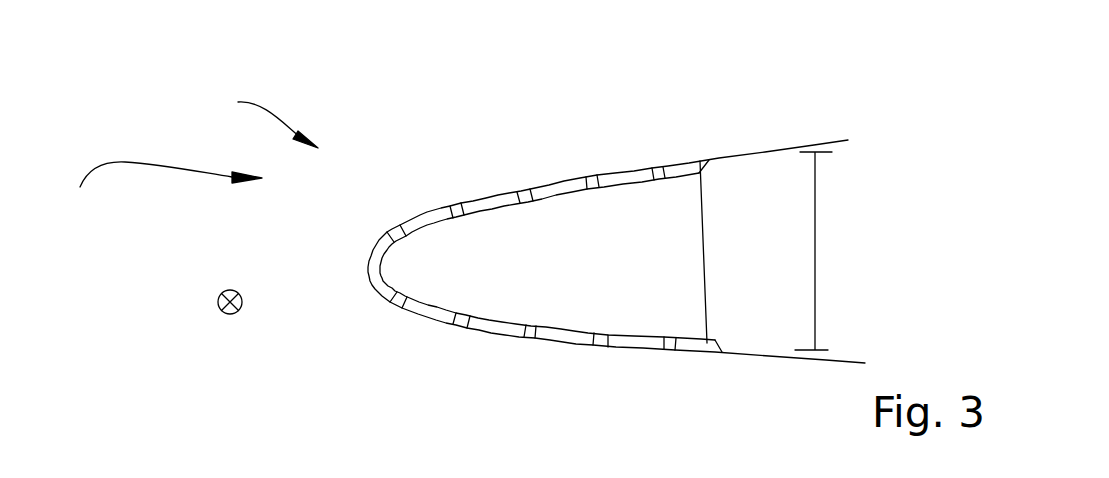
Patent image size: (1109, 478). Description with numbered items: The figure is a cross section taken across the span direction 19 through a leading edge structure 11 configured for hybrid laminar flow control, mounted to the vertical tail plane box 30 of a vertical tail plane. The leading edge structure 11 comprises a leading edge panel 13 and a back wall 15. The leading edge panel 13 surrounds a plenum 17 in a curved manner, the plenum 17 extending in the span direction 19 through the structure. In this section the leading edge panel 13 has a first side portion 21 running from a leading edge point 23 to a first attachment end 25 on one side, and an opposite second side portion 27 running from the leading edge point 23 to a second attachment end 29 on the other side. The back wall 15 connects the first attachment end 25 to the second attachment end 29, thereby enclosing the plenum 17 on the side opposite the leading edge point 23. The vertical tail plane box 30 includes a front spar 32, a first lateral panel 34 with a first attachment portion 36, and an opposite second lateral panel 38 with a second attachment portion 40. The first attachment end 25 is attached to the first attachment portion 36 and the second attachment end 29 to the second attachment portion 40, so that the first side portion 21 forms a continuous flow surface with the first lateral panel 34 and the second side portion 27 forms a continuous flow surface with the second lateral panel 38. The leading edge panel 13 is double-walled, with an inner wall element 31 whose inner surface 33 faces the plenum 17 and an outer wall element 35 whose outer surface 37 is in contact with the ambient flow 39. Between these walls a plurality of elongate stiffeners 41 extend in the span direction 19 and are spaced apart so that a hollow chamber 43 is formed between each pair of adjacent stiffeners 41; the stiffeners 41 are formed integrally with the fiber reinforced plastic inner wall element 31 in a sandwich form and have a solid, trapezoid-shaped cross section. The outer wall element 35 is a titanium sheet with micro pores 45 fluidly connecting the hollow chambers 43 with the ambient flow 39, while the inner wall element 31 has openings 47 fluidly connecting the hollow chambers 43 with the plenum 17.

The leading edge structure 11 is at (264, 120).
The leading edge panel 13 is at (575, 183).
The back wall 15 is at (707, 290).
The plenum 17 is at (641, 256).
The span direction 19 is at (230, 290).
The first side portion 21 is at (622, 167).
The leading edge point 23 is at (370, 278).
The first attachment end 25 is at (707, 160).
The second side portion 27 is at (627, 352).
The second attachment end 29 is at (717, 355).
The vertical tail plane box 30 is at (906, 250).
The inner wall element 31 is at (594, 256).
The front spar 32 is at (815, 262).
The inner surface 33 is at (613, 183).
The first lateral panel 34 is at (830, 143).
The outer wall element 35 is at (502, 148).
The first attachment portion 36 is at (785, 149).
The outer surface 37 is at (475, 198).
The second lateral panel 38 is at (833, 358).
The ambient flow 39 is at (138, 162).
The second attachment portion 40 is at (778, 358).
The stiffeners 41 is at (600, 338).
The hollow chamber 43 is at (510, 322).
The micro pores 45 is at (405, 225).
The openings 47 is at (577, 327).